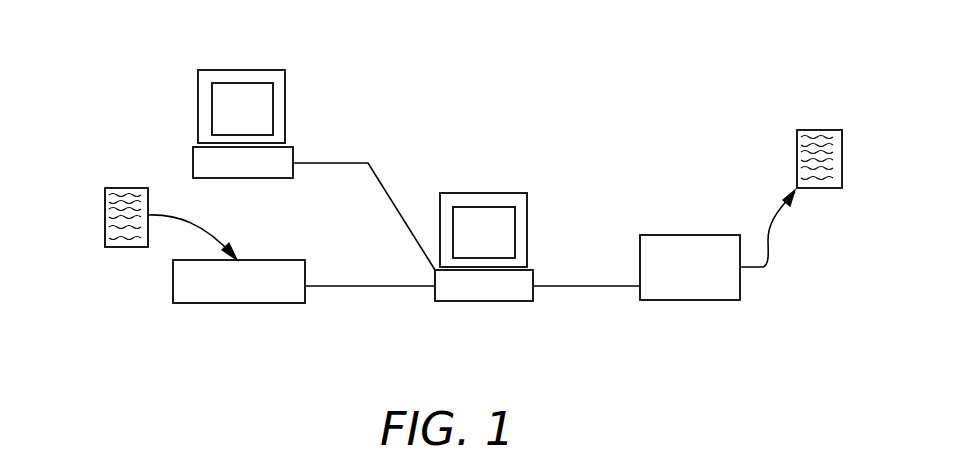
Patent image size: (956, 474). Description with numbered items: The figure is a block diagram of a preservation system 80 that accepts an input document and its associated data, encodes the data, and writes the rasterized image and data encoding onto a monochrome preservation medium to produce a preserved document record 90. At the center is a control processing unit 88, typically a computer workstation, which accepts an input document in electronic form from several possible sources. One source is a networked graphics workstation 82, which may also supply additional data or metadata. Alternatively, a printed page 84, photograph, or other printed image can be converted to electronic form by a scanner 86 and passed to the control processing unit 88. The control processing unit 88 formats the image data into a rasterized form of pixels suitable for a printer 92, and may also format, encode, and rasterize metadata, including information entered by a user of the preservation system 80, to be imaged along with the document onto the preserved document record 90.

The preservation system 80 is at (140, 103).
The networked graphics workstation 82 is at (237, 70).
The printed page 84 is at (123, 187).
The scanner 86 is at (237, 303).
The control processing unit 88 is at (483, 301).
The preserved document record 90 is at (817, 130).
The printer 92 is at (692, 300).